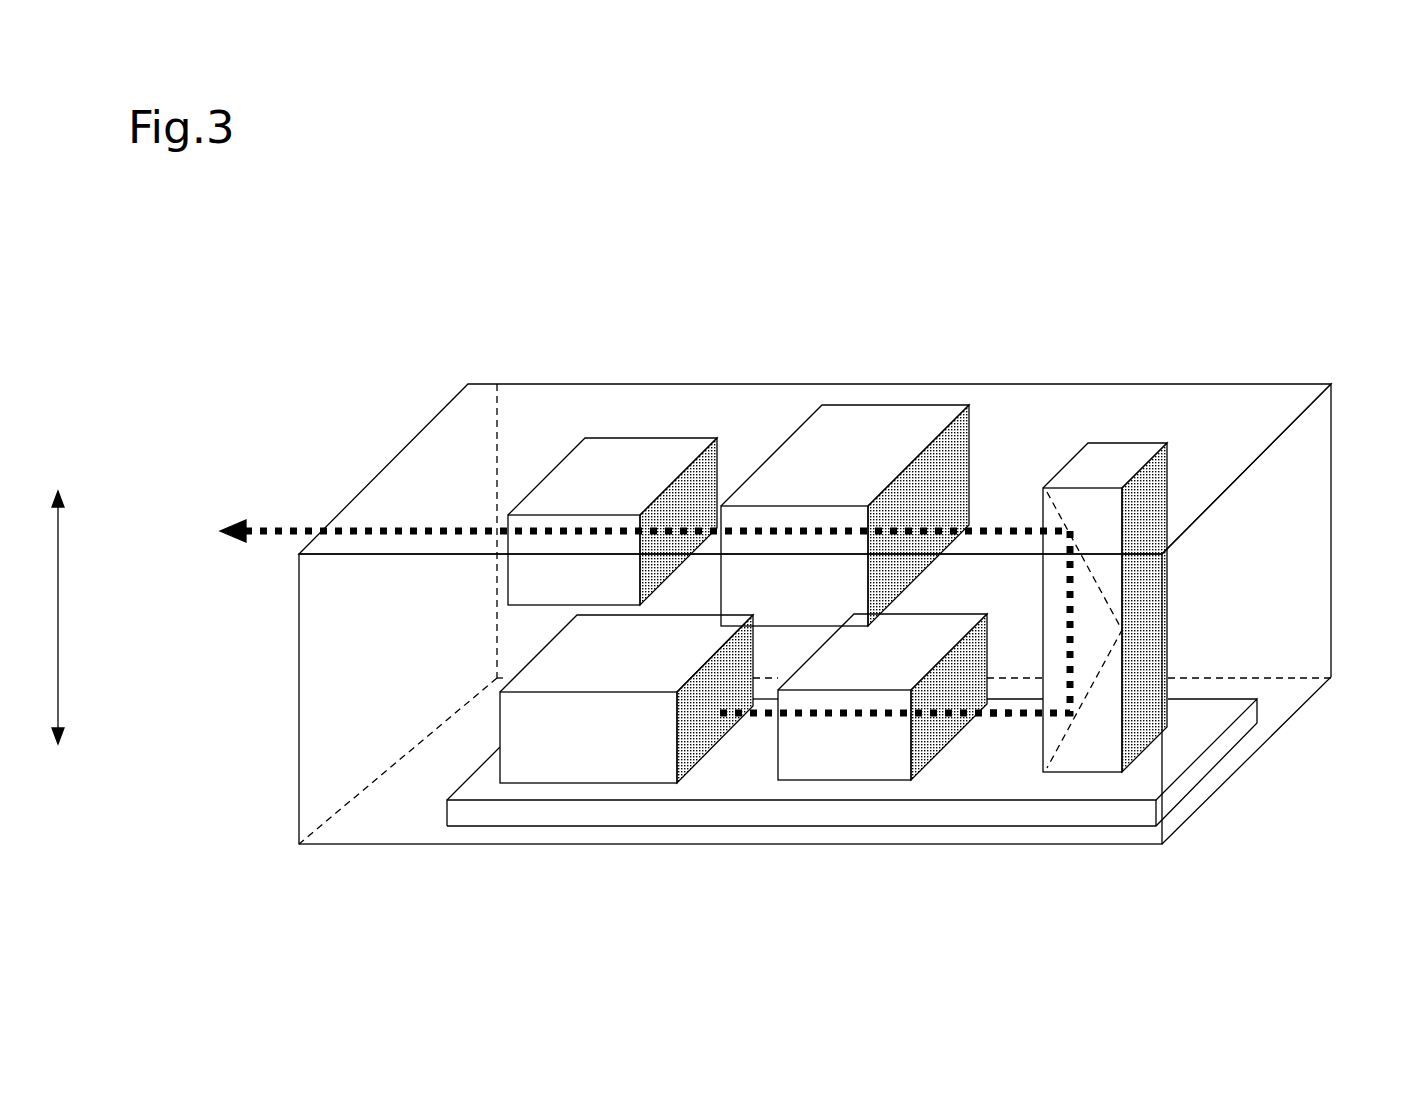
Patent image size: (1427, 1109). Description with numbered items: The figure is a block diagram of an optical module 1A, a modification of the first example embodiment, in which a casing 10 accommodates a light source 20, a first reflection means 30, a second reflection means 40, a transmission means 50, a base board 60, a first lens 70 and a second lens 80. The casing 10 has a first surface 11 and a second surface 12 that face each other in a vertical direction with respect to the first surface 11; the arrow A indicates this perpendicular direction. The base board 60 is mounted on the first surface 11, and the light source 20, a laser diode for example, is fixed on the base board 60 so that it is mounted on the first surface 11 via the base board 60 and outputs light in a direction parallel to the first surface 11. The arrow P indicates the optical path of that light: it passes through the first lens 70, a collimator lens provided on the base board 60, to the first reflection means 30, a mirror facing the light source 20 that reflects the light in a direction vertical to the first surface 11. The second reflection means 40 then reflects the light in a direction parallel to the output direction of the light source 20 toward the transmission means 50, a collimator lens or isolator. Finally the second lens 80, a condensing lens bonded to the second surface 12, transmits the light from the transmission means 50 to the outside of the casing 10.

The optical module 1A is at (1083, 123).
The casing 10 is at (435, 447).
The first surface 11 is at (395, 821).
The second surface 12 is at (1110, 402).
The light source 20 is at (555, 663).
The first reflection means 30 is at (1063, 735).
The second reflection means 40 is at (1107, 597).
The transmission means 50 is at (882, 418).
The base board 60 is at (553, 813).
The first lens 70 is at (838, 767).
The second lens 80 is at (638, 453).
The arrow P is at (1000, 714).
The arrow A is at (72, 617).